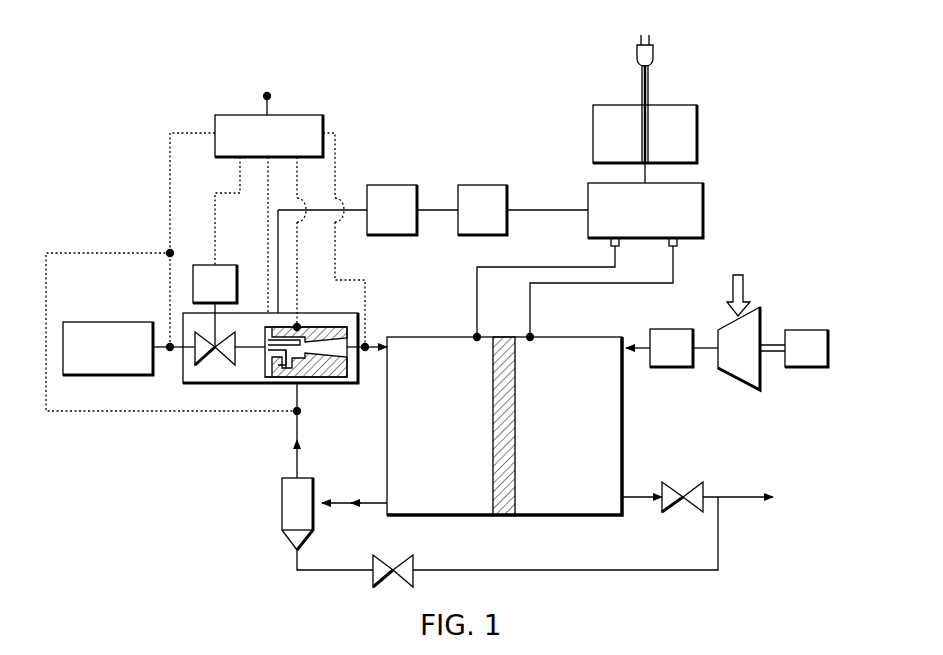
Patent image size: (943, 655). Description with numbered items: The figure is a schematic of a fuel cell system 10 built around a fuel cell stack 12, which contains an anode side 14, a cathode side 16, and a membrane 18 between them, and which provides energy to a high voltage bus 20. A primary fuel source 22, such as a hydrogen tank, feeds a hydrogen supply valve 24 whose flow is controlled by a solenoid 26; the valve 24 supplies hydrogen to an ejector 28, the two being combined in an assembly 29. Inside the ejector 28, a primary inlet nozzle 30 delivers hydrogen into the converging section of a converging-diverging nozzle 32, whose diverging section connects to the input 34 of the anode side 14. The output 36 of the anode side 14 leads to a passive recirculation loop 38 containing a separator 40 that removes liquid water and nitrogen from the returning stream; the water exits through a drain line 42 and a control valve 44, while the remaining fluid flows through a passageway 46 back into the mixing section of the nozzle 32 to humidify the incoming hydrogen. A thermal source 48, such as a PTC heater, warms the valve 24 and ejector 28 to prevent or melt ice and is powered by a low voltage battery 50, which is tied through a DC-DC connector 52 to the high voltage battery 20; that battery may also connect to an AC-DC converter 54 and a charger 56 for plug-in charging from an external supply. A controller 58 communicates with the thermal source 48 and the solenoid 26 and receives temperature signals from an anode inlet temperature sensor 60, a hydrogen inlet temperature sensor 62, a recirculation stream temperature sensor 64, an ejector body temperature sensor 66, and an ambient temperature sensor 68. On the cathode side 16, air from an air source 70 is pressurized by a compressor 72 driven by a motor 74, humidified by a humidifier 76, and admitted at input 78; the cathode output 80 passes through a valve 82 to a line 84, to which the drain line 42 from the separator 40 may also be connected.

The fuel cell system 10 is at (115, 195).
The fuel cell stack 12 is at (423, 335).
The anode side 14 is at (443, 428).
The cathode side 16 is at (567, 428).
The membrane 18 is at (500, 516).
The high voltage bus 20 is at (645, 214).
The primary fuel source 22 is at (108, 322).
The hydrogen supply valve 24 is at (210, 367).
The solenoid 26 is at (202, 265).
The ejector 28 is at (268, 362).
The assembly 29 is at (183, 365).
The primary inlet nozzle 30 is at (288, 378).
The converging-diverging nozzle 32 is at (313, 327).
The input 34 is at (378, 352).
The output 36 is at (384, 508).
The passive recirculation loop 38 is at (246, 484).
The separator 40 is at (297, 514).
The drain line 42 is at (295, 567).
The control valve 44 is at (387, 583).
The passageway 46 is at (295, 460).
The thermal source 48 is at (318, 385).
The low voltage battery 50 is at (390, 185).
The DC-DC connector 52 is at (482, 185).
The AC-DC converter 54 is at (683, 105).
The charger 56 is at (637, 52).
The controller 58 is at (237, 115).
The anode inlet temperature sensor 60 is at (367, 343).
The hydrogen inlet temperature sensor 62 is at (170, 343).
The recirculation stream temperature sensor 64 is at (302, 411).
The ejector body temperature sensor 66 is at (297, 322).
The ambient temperature sensor 68 is at (264, 96).
The air source 70 is at (746, 291).
The compressor 72 is at (739, 348).
The motor 74 is at (806, 348).
The humidifier 76 is at (671, 348).
The input 78 is at (641, 345).
The output 80 is at (636, 500).
The valve 82 is at (681, 502).
The line 84 is at (738, 500).